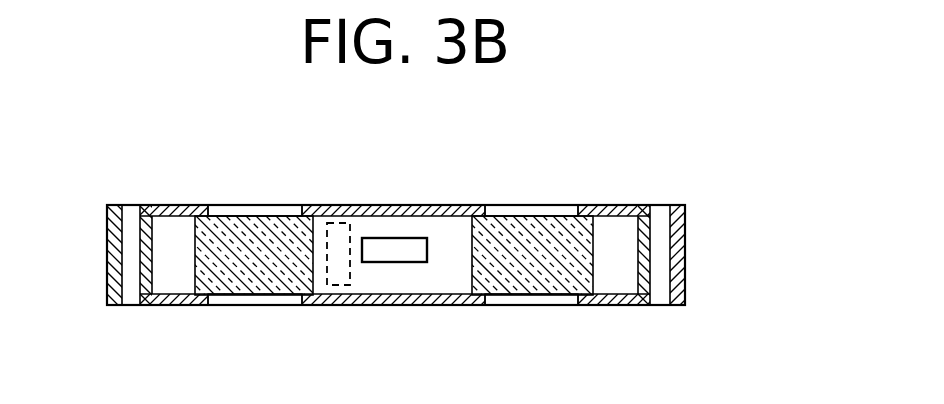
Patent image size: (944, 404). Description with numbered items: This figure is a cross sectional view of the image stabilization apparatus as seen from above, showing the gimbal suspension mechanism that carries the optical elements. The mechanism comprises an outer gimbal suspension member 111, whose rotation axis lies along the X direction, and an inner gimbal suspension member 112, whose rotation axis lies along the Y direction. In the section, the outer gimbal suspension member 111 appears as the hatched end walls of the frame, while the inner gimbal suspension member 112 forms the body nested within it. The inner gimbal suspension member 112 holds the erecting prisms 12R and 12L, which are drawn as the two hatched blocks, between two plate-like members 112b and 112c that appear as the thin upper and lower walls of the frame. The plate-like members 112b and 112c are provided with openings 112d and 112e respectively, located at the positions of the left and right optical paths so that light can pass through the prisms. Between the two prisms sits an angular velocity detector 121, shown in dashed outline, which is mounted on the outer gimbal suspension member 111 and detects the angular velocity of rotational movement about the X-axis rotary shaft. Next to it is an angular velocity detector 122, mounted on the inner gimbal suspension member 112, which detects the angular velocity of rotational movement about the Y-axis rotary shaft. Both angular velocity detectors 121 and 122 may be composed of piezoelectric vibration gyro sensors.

The outer gimbal suspension member 111 is at (685, 243).
The inner gimbal suspension member 112 is at (612, 204).
The plate-like member 112b is at (168, 205).
The plate-like member 112c is at (160, 305).
The opening 112d is at (555, 210).
The opening 112e is at (250, 208).
The erecting prism 12R is at (272, 232).
The erecting prism 12L is at (503, 220).
The angular velocity detector 121 is at (333, 278).
The angular velocity detector 122 is at (395, 250).